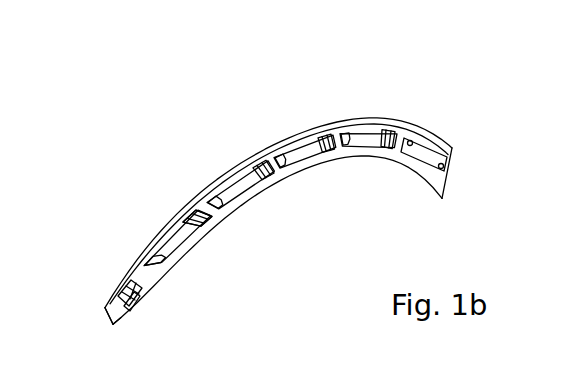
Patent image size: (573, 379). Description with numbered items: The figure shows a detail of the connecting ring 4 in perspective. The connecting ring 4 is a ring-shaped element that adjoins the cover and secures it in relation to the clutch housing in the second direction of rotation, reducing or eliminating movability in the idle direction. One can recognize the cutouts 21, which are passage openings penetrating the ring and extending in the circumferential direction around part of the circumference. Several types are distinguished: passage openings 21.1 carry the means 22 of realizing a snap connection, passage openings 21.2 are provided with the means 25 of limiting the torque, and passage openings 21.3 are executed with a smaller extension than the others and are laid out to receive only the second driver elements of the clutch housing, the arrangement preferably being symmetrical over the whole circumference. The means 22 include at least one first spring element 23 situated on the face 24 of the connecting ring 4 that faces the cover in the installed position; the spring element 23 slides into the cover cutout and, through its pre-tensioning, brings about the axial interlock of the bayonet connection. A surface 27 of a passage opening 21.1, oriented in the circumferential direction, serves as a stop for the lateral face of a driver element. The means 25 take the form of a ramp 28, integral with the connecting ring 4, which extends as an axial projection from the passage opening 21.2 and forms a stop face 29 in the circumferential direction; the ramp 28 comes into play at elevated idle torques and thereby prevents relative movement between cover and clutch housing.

The connecting ring 4 is at (282, 175).
The cutouts 21 is at (367, 137).
The passage openings with snap connection means 21.1 is at (110, 312).
The passage openings with torque-limiting means 21.2 is at (168, 240).
The passage openings 21.3 is at (413, 96).
The means of realizing a snap connection 22 is at (143, 308).
The spring element 23 is at (130, 320).
The face 24 is at (125, 283).
The means of limiting the torque 25 is at (192, 228).
The ramp 28 is at (197, 218).
The surface 27 is at (278, 158).
The stop face 29 is at (306, 160).